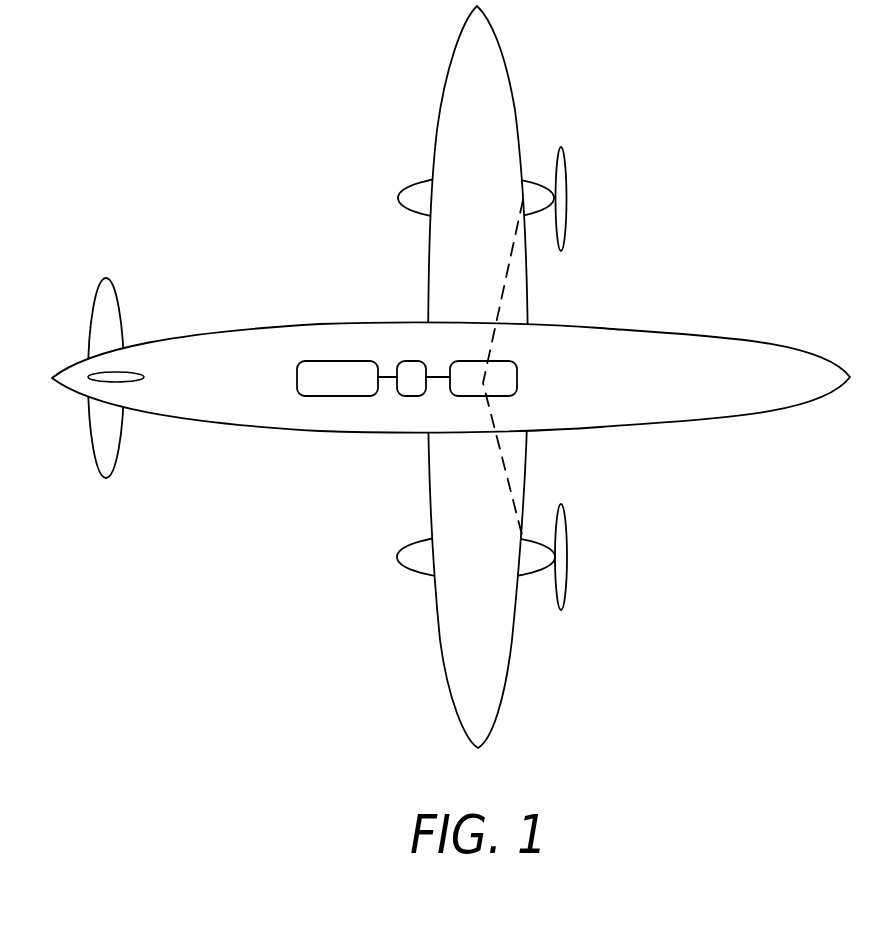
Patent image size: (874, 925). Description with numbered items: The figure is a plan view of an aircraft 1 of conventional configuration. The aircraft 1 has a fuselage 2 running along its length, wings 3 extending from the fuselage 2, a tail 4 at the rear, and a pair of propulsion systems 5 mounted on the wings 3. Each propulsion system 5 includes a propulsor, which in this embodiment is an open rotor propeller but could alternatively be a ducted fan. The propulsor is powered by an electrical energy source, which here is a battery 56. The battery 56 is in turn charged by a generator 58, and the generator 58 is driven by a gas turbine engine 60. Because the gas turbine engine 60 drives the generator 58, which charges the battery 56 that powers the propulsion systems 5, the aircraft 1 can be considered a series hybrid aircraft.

The aircraft 1 is at (438, 377).
The fuselage 2 is at (262, 328).
The wings 3 is at (430, 501).
The tail 4 is at (89, 438).
The propulsion system 5 is at (407, 155).
The battery 56 is at (517, 377).
The generator 58 is at (415, 361).
The gas turbine engine 60 is at (338, 396).